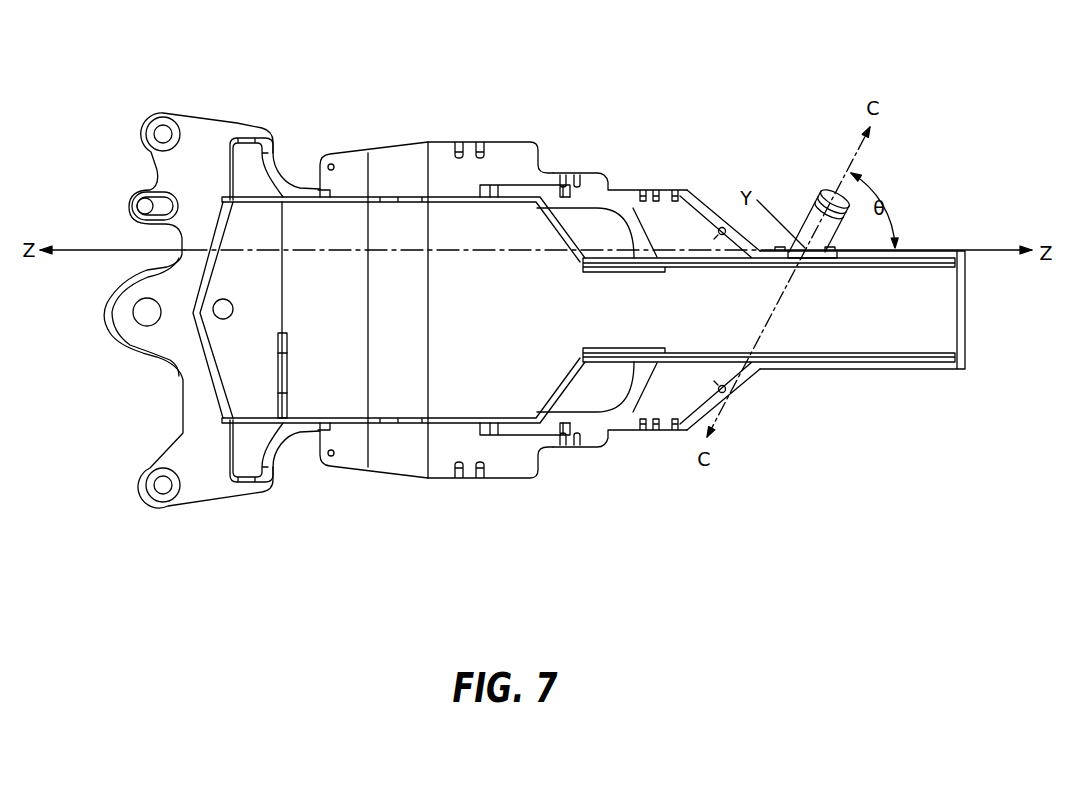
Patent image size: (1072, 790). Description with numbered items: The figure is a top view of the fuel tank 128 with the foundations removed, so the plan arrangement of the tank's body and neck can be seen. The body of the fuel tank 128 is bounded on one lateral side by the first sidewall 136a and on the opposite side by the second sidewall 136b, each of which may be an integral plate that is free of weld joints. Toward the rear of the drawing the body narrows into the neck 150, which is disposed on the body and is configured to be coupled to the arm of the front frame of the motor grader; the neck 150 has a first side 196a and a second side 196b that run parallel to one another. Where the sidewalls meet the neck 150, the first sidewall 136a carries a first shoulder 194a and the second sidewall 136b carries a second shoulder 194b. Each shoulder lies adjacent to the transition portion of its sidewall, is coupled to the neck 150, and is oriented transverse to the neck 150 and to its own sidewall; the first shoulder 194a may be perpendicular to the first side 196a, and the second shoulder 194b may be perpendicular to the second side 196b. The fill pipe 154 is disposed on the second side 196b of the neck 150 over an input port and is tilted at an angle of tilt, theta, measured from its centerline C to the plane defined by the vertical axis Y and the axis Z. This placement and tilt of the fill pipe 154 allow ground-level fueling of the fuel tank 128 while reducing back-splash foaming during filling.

The fuel tank 128 is at (103, 83).
The first sidewall 136a is at (408, 430).
The second sidewall 136b is at (408, 190).
The neck 150 is at (852, 337).
The fill pipe 154 is at (810, 217).
The first shoulder 194a is at (595, 390).
The second shoulder 194b is at (597, 232).
The first side 196a is at (628, 360).
The second side 196b is at (628, 260).